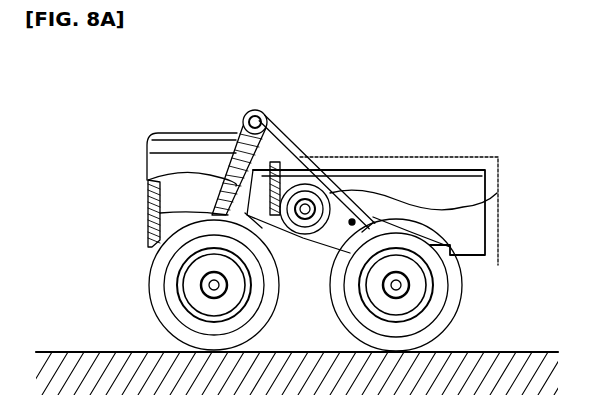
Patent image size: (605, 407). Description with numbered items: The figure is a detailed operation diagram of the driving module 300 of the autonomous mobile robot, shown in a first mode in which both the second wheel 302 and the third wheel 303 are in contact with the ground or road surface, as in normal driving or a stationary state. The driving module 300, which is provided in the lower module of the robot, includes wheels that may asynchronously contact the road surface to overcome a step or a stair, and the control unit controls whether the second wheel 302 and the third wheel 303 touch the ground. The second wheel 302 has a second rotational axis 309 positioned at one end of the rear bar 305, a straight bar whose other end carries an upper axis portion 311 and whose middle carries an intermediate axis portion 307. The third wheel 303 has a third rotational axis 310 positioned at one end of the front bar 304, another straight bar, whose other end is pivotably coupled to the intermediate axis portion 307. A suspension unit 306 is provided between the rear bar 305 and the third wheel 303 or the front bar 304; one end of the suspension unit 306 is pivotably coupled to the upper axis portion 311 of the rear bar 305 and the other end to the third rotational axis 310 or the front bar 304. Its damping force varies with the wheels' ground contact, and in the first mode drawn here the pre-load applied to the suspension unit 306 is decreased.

The driving module 300 is at (394, 93).
The second wheel 302 is at (433, 308).
The third wheel 303 is at (192, 348).
The front bar 304 is at (150, 213).
The rear bar 305 is at (283, 127).
The suspension unit 306 is at (148, 181).
The intermediate axis portion 307 is at (497, 200).
The second rotational axis 309 is at (407, 280).
The third rotational axis 310 is at (180, 283).
The upper axis portion 311 is at (250, 113).